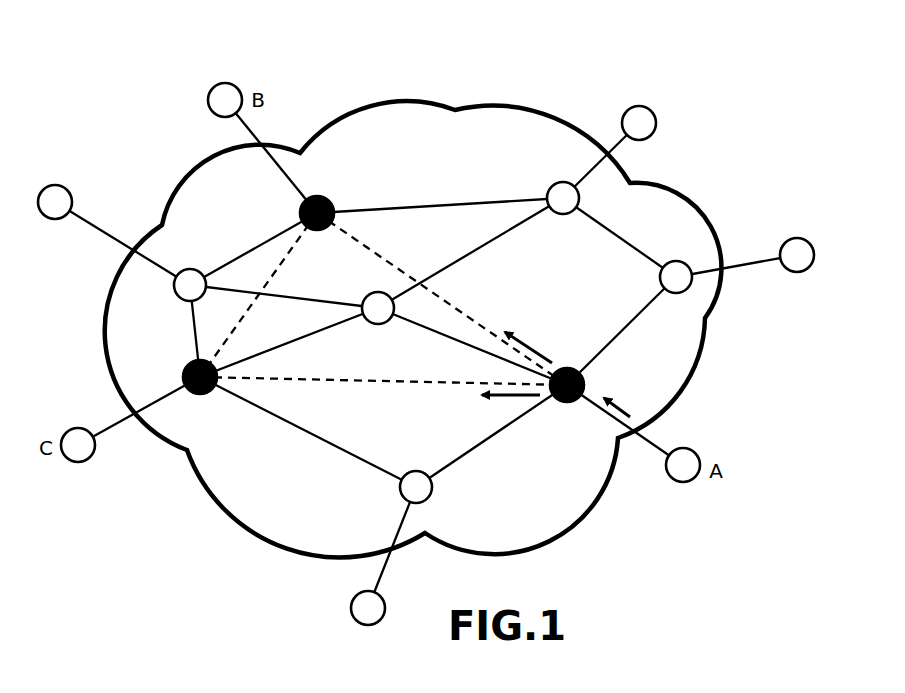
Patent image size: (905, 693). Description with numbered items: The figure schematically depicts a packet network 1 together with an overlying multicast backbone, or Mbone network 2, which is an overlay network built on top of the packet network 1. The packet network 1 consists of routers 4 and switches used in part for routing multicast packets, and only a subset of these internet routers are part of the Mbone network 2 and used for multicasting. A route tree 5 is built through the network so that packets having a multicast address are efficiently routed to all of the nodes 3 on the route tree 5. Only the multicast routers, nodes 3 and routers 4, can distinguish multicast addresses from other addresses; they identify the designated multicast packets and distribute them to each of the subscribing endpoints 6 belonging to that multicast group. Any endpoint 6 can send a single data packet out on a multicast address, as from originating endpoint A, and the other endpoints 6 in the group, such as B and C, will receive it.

The packet network 1 is at (510, 100).
The Mbone network 2 is at (497, 432).
The nodes 3 is at (318, 196).
The routers 4 is at (190, 269).
The route tree 5 is at (360, 386).
The endpoints 6 is at (225, 83).